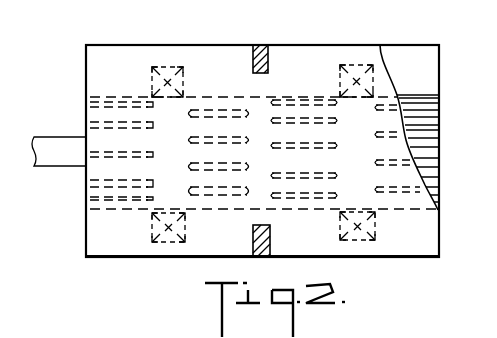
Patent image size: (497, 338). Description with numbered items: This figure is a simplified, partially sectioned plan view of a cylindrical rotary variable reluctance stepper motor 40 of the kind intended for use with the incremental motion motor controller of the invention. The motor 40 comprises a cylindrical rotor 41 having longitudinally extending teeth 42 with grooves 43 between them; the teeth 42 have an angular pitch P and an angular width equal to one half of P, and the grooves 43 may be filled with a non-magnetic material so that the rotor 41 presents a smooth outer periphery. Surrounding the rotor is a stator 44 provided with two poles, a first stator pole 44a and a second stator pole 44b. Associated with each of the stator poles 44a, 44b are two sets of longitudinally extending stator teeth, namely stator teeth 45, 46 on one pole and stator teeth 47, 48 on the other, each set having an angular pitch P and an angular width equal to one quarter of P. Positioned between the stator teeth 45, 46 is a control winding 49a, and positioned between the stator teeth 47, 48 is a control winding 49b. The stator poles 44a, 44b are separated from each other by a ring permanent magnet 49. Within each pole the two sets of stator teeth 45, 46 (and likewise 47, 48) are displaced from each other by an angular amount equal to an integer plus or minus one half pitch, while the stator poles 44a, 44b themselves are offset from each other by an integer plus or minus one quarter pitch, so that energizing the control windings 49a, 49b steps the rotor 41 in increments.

The motor 40 is at (468, 62).
The cylindrical rotor 41 is at (440, 102).
The teeth 42 is at (430, 125).
The grooves 43 is at (435, 141).
The stator 44 is at (86, 236).
The stator pole 44a is at (166, 261).
The stator pole 44b is at (365, 262).
The stator teeth 45 is at (110, 100).
The stator teeth 46 is at (213, 112).
The stator teeth 47 is at (301, 104).
The stator teeth 48 is at (397, 190).
The ring permanent magnet 49 is at (266, 45).
The control winding 49a is at (168, 66).
The control winding 49b is at (357, 66).